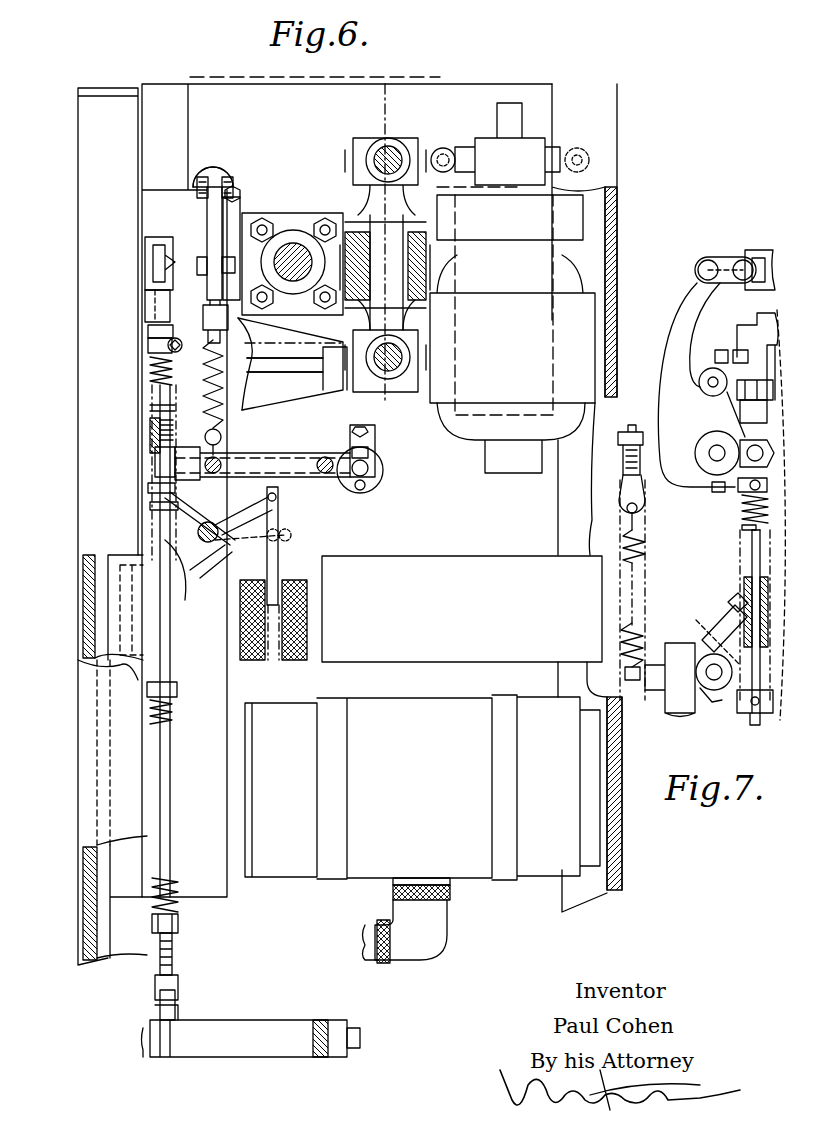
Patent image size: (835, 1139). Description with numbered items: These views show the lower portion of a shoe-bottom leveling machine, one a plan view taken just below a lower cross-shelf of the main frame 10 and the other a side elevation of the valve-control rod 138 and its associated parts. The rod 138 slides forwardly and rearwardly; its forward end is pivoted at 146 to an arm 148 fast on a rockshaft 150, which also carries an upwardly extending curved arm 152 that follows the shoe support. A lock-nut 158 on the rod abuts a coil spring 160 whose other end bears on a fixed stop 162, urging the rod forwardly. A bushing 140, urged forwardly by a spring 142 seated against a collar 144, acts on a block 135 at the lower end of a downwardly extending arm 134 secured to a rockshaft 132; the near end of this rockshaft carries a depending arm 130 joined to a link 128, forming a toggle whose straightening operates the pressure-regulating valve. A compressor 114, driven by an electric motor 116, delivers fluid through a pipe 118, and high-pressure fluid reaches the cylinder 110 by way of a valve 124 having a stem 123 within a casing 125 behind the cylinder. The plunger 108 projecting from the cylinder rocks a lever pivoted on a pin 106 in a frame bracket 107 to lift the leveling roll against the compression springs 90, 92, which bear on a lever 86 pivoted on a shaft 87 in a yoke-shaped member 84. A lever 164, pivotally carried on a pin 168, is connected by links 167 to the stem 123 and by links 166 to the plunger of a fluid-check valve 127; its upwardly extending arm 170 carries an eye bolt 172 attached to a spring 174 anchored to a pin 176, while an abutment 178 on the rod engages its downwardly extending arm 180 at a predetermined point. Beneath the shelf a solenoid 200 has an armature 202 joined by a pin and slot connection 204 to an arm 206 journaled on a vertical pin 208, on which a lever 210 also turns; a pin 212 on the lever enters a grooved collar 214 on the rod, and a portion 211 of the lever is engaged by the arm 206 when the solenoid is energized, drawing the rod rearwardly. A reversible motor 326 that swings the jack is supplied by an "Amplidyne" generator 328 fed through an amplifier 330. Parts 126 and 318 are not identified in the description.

In FIG. 6, the main frame 10 is at (112, 680).
In FIG. 6, the yoke-shaped member 84 is at (389, 266).
In FIG. 6, the lever 86 is at (355, 215).
In FIG. 6, the shaft 87 is at (430, 245).
In FIG. 6, the compression spring 90 is at (395, 140).
In FIG. 6, the compression spring 92 is at (392, 385).
In FIG. 6, the pin 106 is at (295, 332).
In FIG. 6, the frame bracket 107 is at (330, 400).
In FIG. 6, the plunger 108 is at (290, 255).
In FIG. 6, the cylinder 110 is at (292, 251).
In FIG. 6, the compressor 114 is at (540, 234).
In FIG. 6, the electric motor 116 is at (512, 362).
In FIG. 6, the pipe 118 is at (580, 145).
In FIG. 7, the stem 123 is at (745, 330).
In FIG. 6, the valve 124 is at (176, 238).
In FIG. 6, the casing 125 is at (236, 222).
In FIG. 6, the pivot block 126 is at (205, 168).
In FIG. 7, the pivot block 126 is at (757, 250).
In FIG. 6, the valve 127 is at (222, 175).
In FIG. 7, the link 128 is at (778, 715).
In FIG. 6, the depending arm 130 is at (378, 442).
In FIG. 7, the depending arm 130 is at (728, 610).
In FIG. 6, the rockshaft 132 is at (297, 456).
In FIG. 7, the rockshaft 132 is at (712, 665).
In FIG. 6, the downwardly extending arm 134 is at (185, 418).
In FIG. 7, the downwardly extending arm 134 is at (728, 715).
In FIG. 6, the block 135 is at (155, 468).
In FIG. 6, the valve-control rod 138 is at (158, 412).
In FIG. 7, the valve-control rod 138 is at (750, 558).
In FIG. 6, the bushing 140 is at (168, 422).
In FIG. 7, the bushing 140 is at (744, 590).
In FIG. 6, the spring 142 is at (150, 380).
In FIG. 7, the spring 142 is at (748, 530).
In FIG. 6, the collar 144 is at (148, 350).
In FIG. 7, the collar 144 is at (742, 505).
In FIG. 6, the pivot 146 is at (183, 1012).
In FIG. 6, the arm 148 is at (152, 1060).
In FIG. 6, the rockshaft 150 is at (362, 1025).
In FIG. 6, the curved arm 152 is at (320, 1018).
In FIG. 6, the lock-nut 158 is at (182, 922).
In FIG. 6, the coil spring 160 is at (180, 885).
In FIG. 6, the fixed stop 162 is at (178, 712).
In FIG. 6, the lever 164 is at (212, 248).
In FIG. 7, the lever 164 is at (668, 338).
In FIG. 6, the links 166 is at (232, 178).
In FIG. 7, the links 166 is at (710, 255).
In FIG. 6, the links 167 is at (195, 264).
In FIG. 7, the links 167 is at (715, 357).
In FIG. 6, the pin 168 is at (148, 333).
In FIG. 7, the pin 168 is at (712, 460).
In FIG. 6, the upwardly extending arm 170 is at (203, 318).
In FIG. 7, the upwardly extending arm 170 is at (622, 472).
In FIG. 6, the eye bolt 172 is at (255, 365).
In FIG. 7, the eye bolt 172 is at (620, 510).
In FIG. 6, the spring 174 is at (226, 410).
In FIG. 7, the spring 174 is at (642, 540).
In FIG. 6, the pin 176 is at (222, 445).
In FIG. 7, the pin 176 is at (634, 682).
In FIG. 6, the abutment 178 is at (155, 280).
In FIG. 7, the abutment 178 is at (700, 382).
In FIG. 6, the downwardly extending arm 180 is at (150, 312).
In FIG. 7, the downwardly extending arm 180 is at (740, 415).
In FIG. 6, the solenoid 200 is at (300, 582).
In FIG. 6, the armature 202 is at (287, 548).
In FIG. 6, the pin and slot connection 204 is at (280, 512).
In FIG. 6, the arm 206 is at (332, 522).
In FIG. 6, the vertical pin 208 is at (205, 525).
In FIG. 6, the lever 210 is at (195, 579).
In FIG. 6, the portion 211 is at (210, 560).
In FIG. 6, the pin 212 is at (148, 490).
In FIG. 6, the grooved collar 214 is at (150, 506).
In FIG. 6, the block 318 is at (430, 560).
In FIG. 6, the reversible motor 326 is at (178, 688).
In FIG. 6, the "Amplidyne" generator 328 is at (430, 782).
In FIG. 6, the amplifier 330 is at (235, 893).